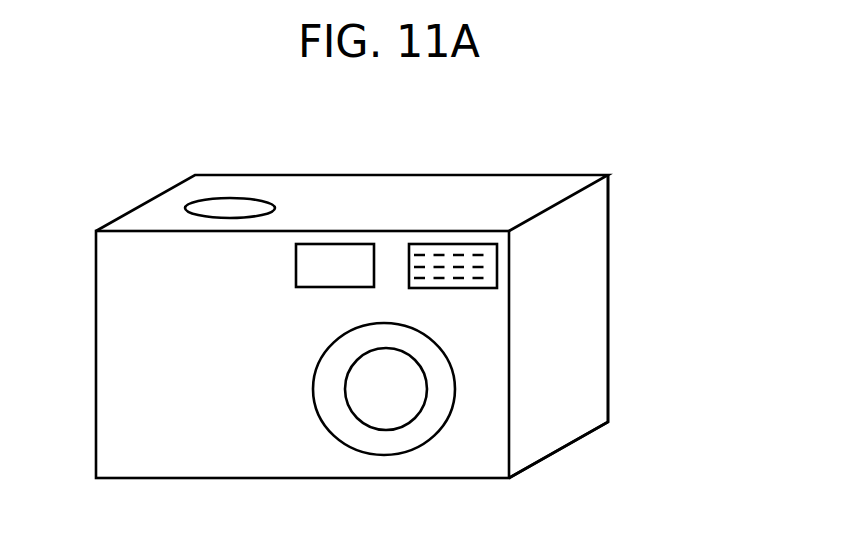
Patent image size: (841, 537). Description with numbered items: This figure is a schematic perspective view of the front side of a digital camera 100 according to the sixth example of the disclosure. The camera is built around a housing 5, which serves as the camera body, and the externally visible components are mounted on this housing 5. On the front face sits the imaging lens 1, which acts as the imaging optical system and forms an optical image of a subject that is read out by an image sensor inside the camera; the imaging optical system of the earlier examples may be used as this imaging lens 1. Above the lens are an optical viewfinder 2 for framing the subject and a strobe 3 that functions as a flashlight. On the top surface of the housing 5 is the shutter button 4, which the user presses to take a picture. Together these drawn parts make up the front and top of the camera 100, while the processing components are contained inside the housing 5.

The digital camera 100 is at (588, 122).
The imaging lens 1 is at (412, 388).
The optical viewfinder 2 is at (334, 258).
The strobe 3 is at (450, 258).
The shutter button 4 is at (235, 207).
The housing 5 is at (590, 270).